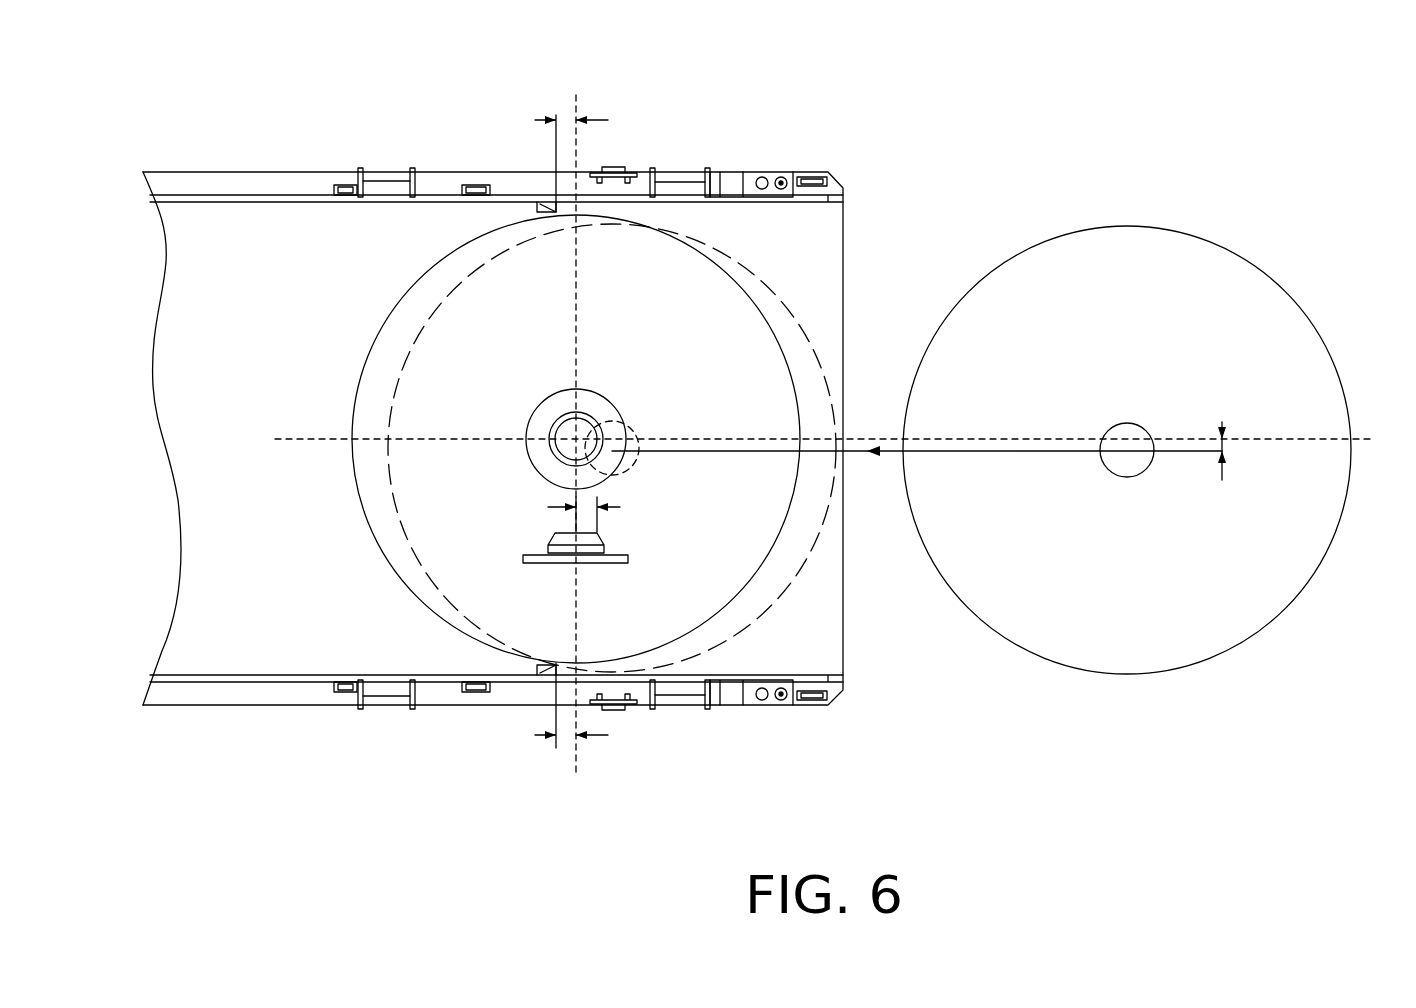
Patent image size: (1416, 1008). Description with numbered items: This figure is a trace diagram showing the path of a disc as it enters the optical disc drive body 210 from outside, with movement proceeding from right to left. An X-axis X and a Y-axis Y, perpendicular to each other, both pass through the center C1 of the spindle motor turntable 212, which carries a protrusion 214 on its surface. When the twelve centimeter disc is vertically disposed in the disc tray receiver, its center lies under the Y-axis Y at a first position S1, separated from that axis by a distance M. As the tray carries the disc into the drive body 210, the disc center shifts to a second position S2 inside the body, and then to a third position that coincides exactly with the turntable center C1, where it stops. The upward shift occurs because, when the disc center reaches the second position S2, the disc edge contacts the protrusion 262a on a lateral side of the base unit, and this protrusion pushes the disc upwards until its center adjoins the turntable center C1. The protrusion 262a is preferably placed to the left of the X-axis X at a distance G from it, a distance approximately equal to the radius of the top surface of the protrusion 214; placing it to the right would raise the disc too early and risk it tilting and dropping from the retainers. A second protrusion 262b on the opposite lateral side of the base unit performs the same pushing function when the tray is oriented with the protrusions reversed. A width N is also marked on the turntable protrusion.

The optical disc drive body 210 is at (204, 593).
The spindle motor turntable 212 is at (626, 560).
The protrusion 214 is at (602, 540).
The protrusion 262a is at (546, 670).
The protrusion 262b is at (546, 207).
The first position S1 is at (1124, 453).
The second position S2 is at (614, 446).
The center of the spindle motor turntable C1 is at (574, 437).
The distance G is at (585, 427).
The width N is at (566, 510).
The distance M is at (1237, 466).
The X-axis X is at (579, 449).
The Y-axis Y is at (838, 439).